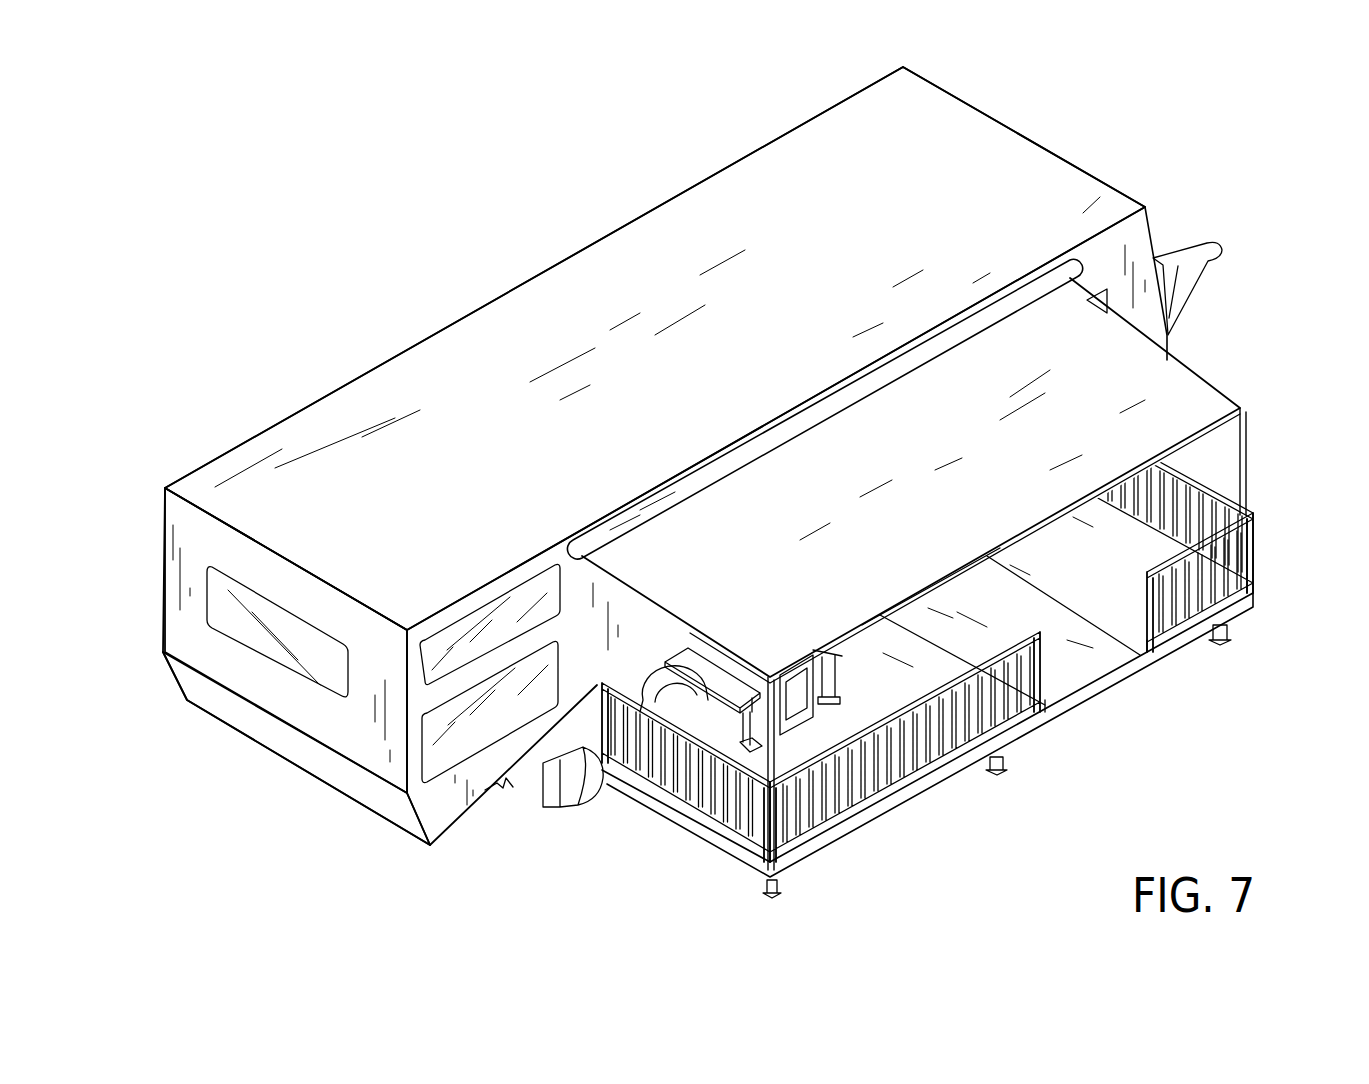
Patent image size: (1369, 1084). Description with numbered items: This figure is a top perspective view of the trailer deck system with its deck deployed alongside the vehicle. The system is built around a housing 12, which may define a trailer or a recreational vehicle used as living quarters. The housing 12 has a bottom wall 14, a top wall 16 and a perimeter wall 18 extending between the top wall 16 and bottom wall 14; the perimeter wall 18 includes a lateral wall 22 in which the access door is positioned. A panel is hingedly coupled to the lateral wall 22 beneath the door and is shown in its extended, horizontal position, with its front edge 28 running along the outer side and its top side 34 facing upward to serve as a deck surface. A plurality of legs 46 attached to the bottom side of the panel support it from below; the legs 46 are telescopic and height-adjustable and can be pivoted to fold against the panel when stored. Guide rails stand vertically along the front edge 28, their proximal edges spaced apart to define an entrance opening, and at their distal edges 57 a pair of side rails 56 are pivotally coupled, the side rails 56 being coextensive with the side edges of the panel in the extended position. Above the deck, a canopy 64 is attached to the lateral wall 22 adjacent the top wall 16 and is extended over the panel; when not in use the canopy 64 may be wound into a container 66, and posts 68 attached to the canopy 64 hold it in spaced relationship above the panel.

The housing 12 is at (218, 725).
The bottom wall 14 is at (447, 838).
The top wall 16 is at (427, 403).
The perimeter wall 18 is at (160, 580).
The lateral wall 22 is at (497, 780).
The front edge 28 is at (1077, 708).
The top side 34 is at (1126, 582).
The legs 46 is at (758, 889).
The side rails 56 is at (693, 777).
The distal edges 57 is at (768, 832).
The canopy 64 is at (1163, 380).
The container 66 is at (1055, 263).
The posts 68 is at (1245, 410).